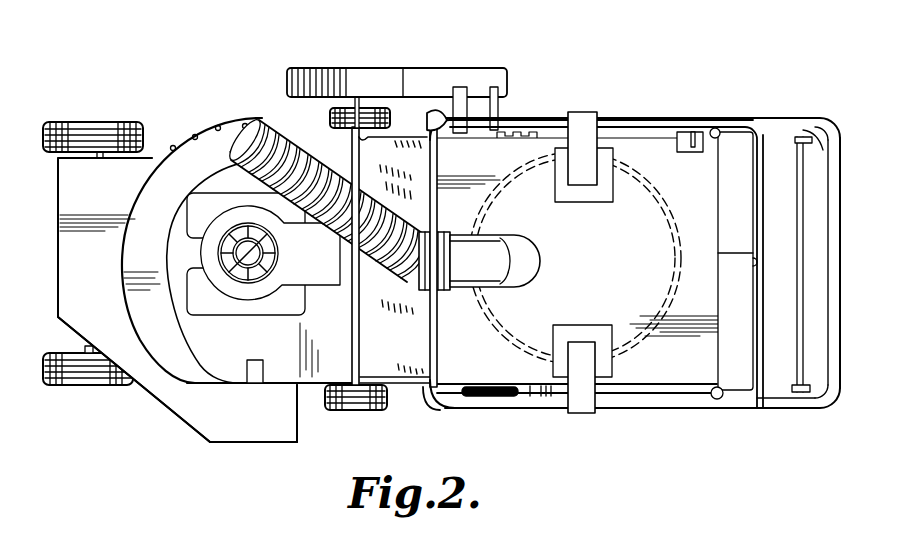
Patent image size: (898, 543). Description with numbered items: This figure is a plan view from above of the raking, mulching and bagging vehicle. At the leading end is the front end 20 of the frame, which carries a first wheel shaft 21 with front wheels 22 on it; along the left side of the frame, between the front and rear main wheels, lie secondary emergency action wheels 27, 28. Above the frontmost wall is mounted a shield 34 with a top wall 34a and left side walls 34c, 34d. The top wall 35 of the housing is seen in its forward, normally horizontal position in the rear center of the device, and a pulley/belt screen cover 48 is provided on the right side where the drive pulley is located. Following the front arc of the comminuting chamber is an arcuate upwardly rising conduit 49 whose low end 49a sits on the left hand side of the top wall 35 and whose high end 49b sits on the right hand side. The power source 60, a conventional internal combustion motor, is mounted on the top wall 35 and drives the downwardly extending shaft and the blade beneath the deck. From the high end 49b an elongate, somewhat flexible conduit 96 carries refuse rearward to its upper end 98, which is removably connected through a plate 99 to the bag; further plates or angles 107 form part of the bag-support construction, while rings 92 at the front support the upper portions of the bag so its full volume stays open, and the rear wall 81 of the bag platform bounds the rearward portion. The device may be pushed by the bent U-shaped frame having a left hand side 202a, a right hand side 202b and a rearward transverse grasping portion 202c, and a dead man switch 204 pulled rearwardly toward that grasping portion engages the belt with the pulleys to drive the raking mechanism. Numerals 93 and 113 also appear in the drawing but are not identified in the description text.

The front end 20 is at (58, 228).
The first wheel shaft 21 is at (90, 350).
The front wheels 22 is at (62, 121).
The secondary emergency action wheel 27 is at (387, 407).
The secondary emergency action wheel 28 is at (518, 410).
The shield 34 is at (72, 292).
The top wall 34a is at (116, 190).
The left side wall 34c is at (180, 418).
The left side wall 34d is at (260, 447).
The top wall 35 is at (282, 375).
The pulley/belt screen cover 48 is at (441, 70).
The arcuate upwardly rising conduit 49 is at (134, 250).
The low end 49a is at (222, 377).
The high end 49b is at (232, 146).
The power source 60 is at (288, 317).
The rear wall 81 is at (718, 213).
The rings 92 is at (353, 404).
The front wheel 93 is at (358, 126).
The elongate flexible conduit 96 is at (334, 228).
The upper end 98 is at (540, 250).
The plate 99 is at (623, 273).
The plates or angles 107 is at (613, 202).
The handle rod 113 is at (610, 120).
The left hand side 202a is at (780, 413).
The right hand side 202b is at (790, 120).
The rearward transverse grasping portion 202c is at (826, 390).
The dead man switch 204 is at (820, 130).